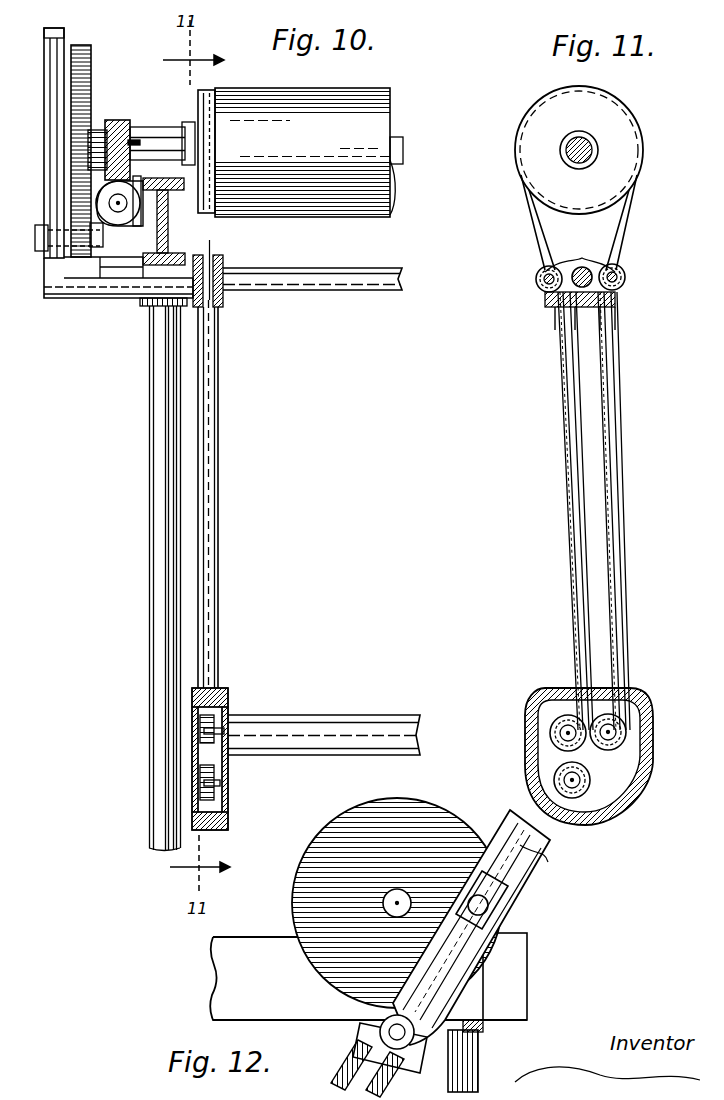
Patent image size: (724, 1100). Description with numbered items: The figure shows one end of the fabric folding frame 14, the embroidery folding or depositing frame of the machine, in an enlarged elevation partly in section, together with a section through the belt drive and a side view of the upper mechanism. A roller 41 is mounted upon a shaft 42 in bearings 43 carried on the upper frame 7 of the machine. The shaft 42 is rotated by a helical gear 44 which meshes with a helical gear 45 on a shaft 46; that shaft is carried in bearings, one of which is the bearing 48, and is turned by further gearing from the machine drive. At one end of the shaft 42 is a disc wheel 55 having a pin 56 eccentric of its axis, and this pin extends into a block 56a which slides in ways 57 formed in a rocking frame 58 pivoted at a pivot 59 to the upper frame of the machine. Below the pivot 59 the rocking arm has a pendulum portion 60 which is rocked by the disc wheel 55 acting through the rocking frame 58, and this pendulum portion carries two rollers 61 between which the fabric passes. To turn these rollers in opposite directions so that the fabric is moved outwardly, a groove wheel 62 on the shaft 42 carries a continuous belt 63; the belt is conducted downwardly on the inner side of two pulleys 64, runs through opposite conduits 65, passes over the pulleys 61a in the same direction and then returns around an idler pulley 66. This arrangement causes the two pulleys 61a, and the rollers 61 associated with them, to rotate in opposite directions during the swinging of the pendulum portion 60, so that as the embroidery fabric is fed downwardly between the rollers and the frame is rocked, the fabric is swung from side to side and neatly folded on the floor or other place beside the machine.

In FIG. 10, the upper frame 7 is at (190, 224).
In FIG. 11, the fabric folding frame 14 is at (656, 514).
In FIG. 10, the roller 41 is at (363, 102).
In FIG. 10, the shaft 42 is at (400, 138).
In FIG. 11, the shaft 42 is at (592, 150).
In FIG. 12, the shaft 42 is at (400, 900).
In FIG. 10, the bearings 43 is at (178, 125).
In FIG. 10, the helical gear 44 is at (117, 118).
In FIG. 10, the helical gear 45 is at (120, 215).
In FIG. 10, the shaft 46 is at (127, 212).
In FIG. 10, the bearing 48 is at (138, 140).
In FIG. 10, the disc wheel 55 is at (91, 52).
In FIG. 12, the disc wheel 55 is at (348, 831).
In FIG. 10, the pin 56 is at (112, 218).
In FIG. 12, the pin 56 is at (488, 902).
In FIG. 10, the block 56a is at (50, 222).
In FIG. 12, the block 56a is at (490, 920).
In FIG. 12, the ways 57 is at (522, 848).
In FIG. 12, the rocking frame 58 is at (465, 990).
In FIG. 10, the pivot 59 is at (47, 280).
In FIG. 11, the pivot 59 is at (590, 288).
In FIG. 12, the pivot 59 is at (430, 1052).
In FIG. 10, the pendulum portion 60 is at (228, 700).
In FIG. 11, the pendulum portion 60 is at (645, 690).
In FIG. 10, the rollers 61 is at (330, 715).
In FIG. 10, the pulleys 61a is at (205, 728).
In FIG. 11, the pulleys 61a is at (552, 722).
In FIG. 10, the groove wheel 62 is at (207, 92).
In FIG. 10, the continuous belt 63 is at (210, 244).
In FIG. 11, the pulleys 64 is at (540, 285).
In FIG. 10, the conduits 65 is at (218, 658).
In FIG. 11, the conduits 65 is at (562, 405).
In FIG. 12, the conduits 65 is at (350, 1058).
In FIG. 10, the idler pulley 66 is at (205, 800).
In FIG. 11, the idler pulley 66 is at (580, 782).